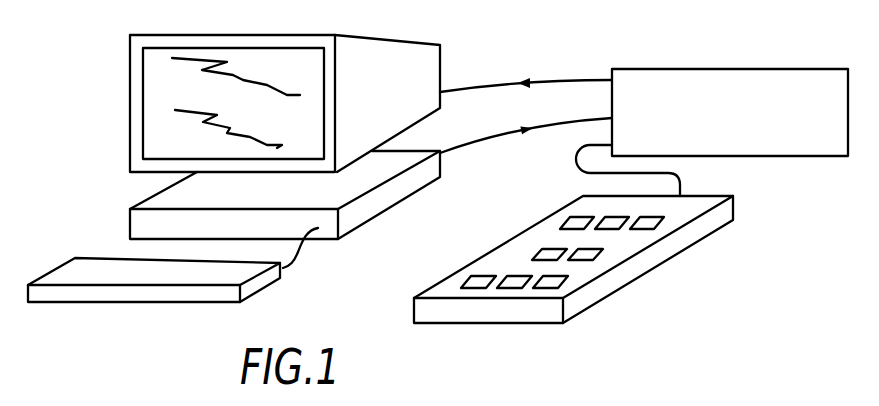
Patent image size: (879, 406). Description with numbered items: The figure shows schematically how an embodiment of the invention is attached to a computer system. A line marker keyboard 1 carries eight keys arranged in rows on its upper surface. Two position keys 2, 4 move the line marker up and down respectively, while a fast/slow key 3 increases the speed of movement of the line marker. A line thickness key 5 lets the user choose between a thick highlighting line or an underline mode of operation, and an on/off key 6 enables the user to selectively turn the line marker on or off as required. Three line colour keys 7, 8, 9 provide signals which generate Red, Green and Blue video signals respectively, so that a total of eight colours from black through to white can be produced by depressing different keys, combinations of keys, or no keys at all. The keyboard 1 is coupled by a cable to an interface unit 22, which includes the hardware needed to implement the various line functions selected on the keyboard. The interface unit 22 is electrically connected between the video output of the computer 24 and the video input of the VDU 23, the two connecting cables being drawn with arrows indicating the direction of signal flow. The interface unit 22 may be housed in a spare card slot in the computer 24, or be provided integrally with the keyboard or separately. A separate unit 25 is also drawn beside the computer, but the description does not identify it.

The line marker keyboard 1 is at (599, 306).
The position key 2 is at (478, 288).
The fast/slow key 3 is at (513, 288).
The position key 4 is at (568, 282).
The line thickness key 5 is at (543, 253).
The on/off key 6 is at (603, 252).
The line colour key 7 is at (563, 220).
The line colour key 8 is at (610, 218).
The line colour key 9 is at (668, 223).
The interface unit 22 is at (735, 69).
The VDU 23 is at (118, 93).
The computer 24 is at (121, 196).
The keyboard 25 is at (111, 246).